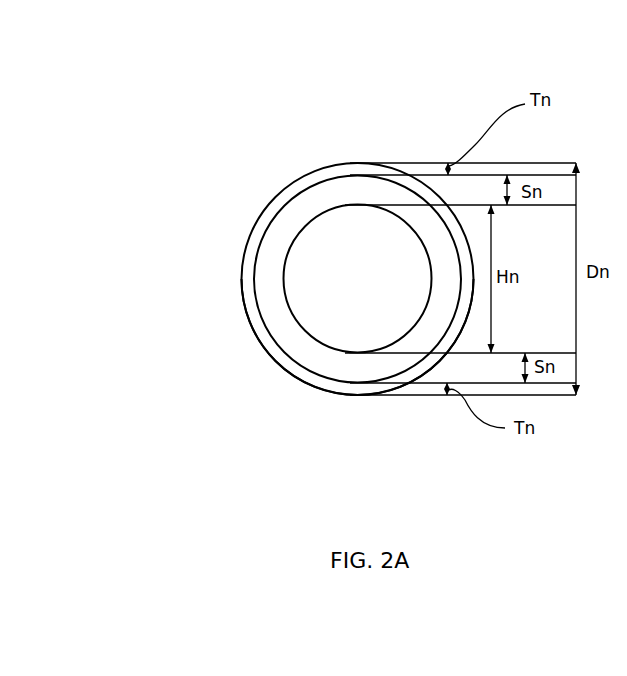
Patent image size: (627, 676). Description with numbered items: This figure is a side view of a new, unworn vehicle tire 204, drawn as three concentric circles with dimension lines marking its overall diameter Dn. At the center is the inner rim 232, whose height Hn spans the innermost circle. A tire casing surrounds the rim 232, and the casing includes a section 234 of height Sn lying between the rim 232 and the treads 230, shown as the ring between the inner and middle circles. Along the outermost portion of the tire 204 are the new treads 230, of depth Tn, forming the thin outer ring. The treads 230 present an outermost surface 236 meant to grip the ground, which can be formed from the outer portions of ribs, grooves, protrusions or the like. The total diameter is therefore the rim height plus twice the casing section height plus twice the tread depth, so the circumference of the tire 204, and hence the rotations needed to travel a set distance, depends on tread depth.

The new tire 204 is at (263, 98).
The tread 230 is at (255, 232).
The rim 232 is at (318, 320).
The casing section 234 is at (273, 293).
The tread outer surface 236 is at (310, 388).